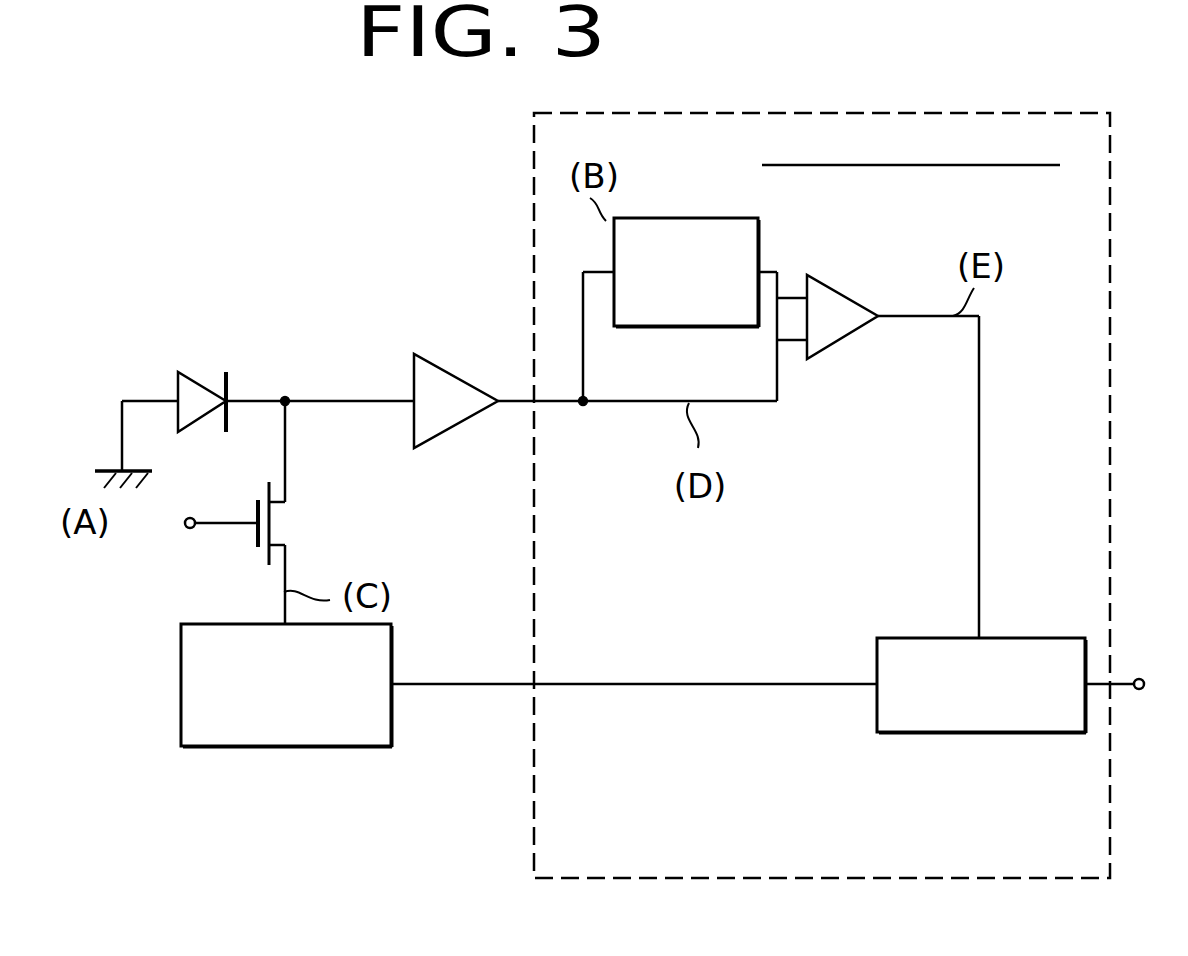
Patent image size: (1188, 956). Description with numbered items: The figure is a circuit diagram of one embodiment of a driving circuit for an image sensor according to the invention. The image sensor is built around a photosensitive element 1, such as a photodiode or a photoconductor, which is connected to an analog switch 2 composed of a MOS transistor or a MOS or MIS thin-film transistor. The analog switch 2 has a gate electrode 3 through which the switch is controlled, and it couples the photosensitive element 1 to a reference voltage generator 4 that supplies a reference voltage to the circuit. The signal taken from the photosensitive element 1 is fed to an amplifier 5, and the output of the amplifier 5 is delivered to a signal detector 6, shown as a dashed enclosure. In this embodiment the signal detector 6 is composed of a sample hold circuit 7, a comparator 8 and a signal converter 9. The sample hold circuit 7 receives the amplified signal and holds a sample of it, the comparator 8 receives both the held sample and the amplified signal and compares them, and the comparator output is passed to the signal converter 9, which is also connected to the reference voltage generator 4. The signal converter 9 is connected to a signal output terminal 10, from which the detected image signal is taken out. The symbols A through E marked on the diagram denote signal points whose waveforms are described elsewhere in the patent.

The photosensitive element 1 is at (210, 372).
The analog switch 2 is at (282, 528).
The gate electrode 3 is at (188, 530).
The reference voltage generator 4 is at (393, 720).
The amplifier 5 is at (467, 380).
The signal detector 6 is at (905, 115).
The sample hold circuit 7 is at (760, 228).
The comparator 8 is at (858, 300).
The signal converter 9 is at (980, 735).
The signal output terminal 10 is at (1146, 676).